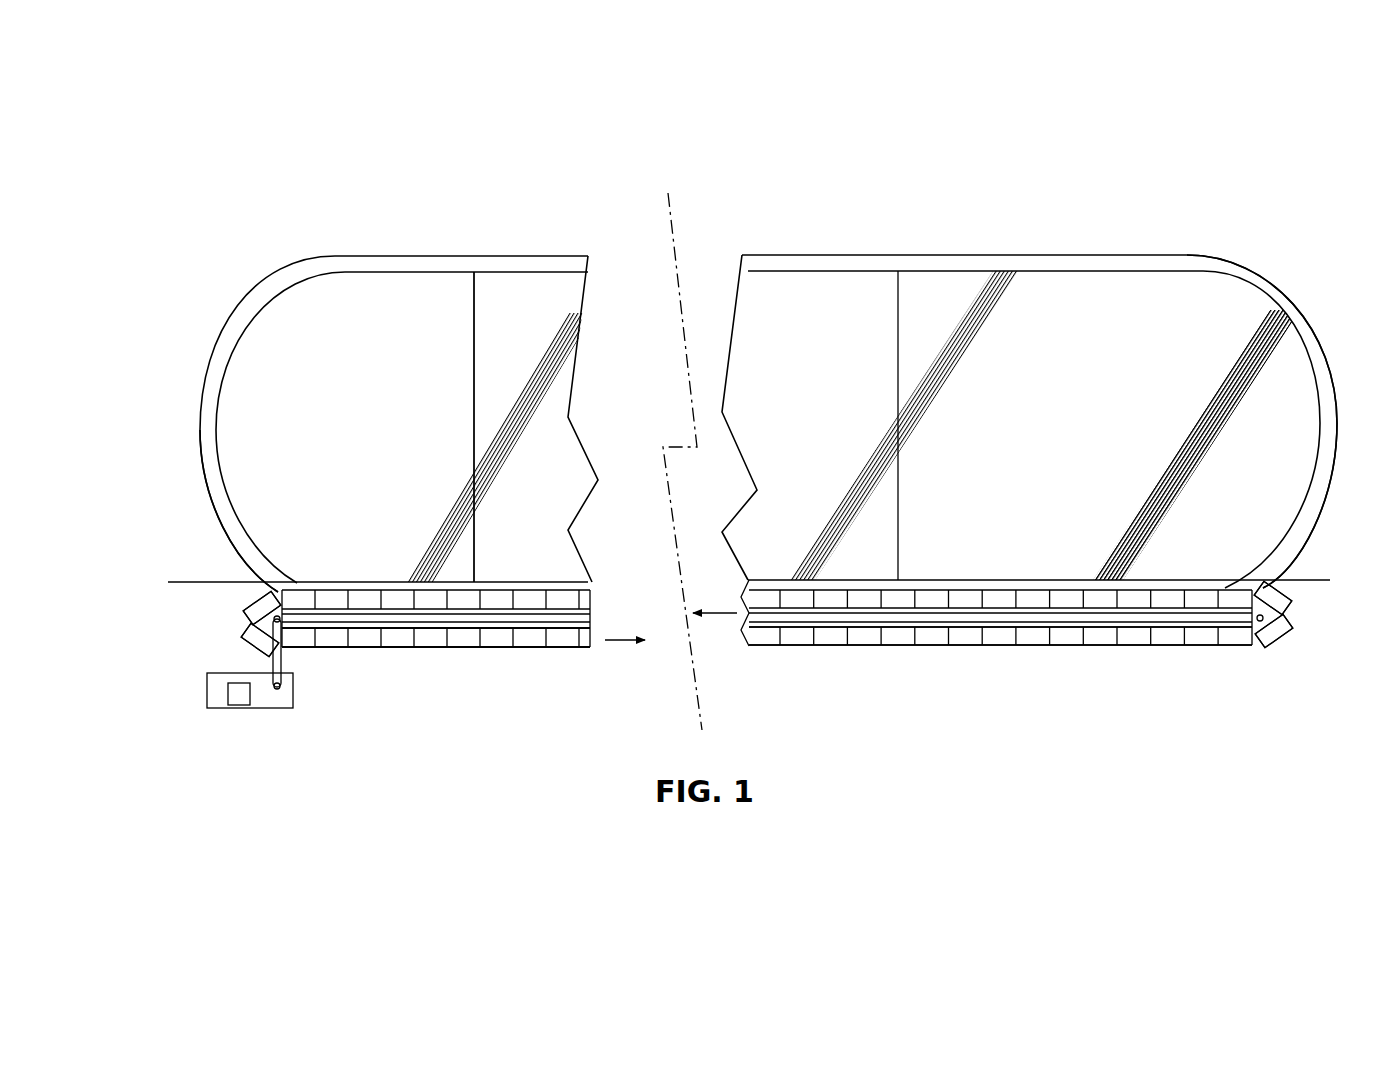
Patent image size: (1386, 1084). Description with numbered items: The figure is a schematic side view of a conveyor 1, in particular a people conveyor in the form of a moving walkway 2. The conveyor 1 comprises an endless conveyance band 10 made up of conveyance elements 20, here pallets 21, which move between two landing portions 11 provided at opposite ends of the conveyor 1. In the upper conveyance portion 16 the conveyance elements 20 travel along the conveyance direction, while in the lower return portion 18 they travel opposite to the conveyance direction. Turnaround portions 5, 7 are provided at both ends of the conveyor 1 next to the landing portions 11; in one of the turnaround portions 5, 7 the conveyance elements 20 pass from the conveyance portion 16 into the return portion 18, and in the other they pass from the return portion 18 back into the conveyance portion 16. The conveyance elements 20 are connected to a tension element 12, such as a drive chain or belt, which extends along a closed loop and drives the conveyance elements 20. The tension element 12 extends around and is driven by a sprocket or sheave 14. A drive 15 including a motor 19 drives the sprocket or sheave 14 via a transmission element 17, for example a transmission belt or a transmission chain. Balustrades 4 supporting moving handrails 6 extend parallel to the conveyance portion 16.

The conveyor 1 is at (236, 268).
The moving walkway 2 is at (236, 268).
The balustrade 4 is at (500, 295).
The turnaround portion 5 is at (208, 633).
The moving handrail 6 is at (1207, 257).
The turnaround portion 7 is at (1320, 608).
The endless conveyance band 10 is at (943, 688).
The landing portion 11 is at (206, 557).
The tension element 12 is at (579, 613).
The sprocket or sheave 14 is at (273, 618).
The drive 15 is at (214, 724).
The conveyance portion 16 is at (1061, 580).
The transmission element 17 is at (298, 650).
The return portion 18 is at (1037, 715).
The motor 19 is at (238, 698).
The conveyance element 20 is at (401, 640).
The pallet 21 is at (405, 677).